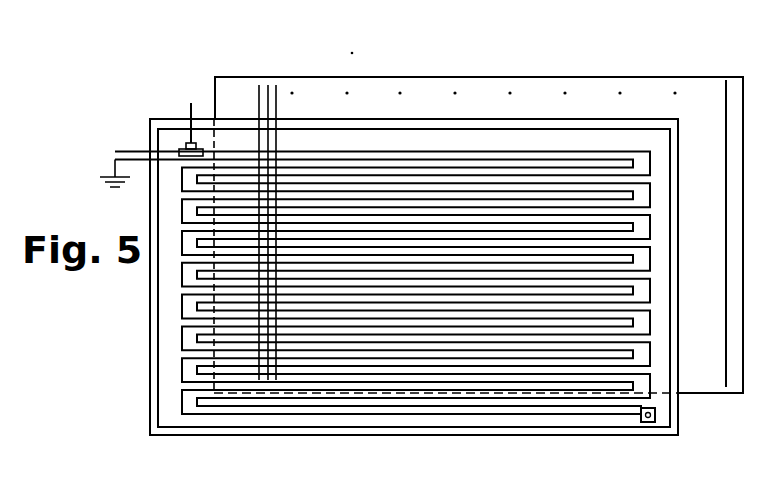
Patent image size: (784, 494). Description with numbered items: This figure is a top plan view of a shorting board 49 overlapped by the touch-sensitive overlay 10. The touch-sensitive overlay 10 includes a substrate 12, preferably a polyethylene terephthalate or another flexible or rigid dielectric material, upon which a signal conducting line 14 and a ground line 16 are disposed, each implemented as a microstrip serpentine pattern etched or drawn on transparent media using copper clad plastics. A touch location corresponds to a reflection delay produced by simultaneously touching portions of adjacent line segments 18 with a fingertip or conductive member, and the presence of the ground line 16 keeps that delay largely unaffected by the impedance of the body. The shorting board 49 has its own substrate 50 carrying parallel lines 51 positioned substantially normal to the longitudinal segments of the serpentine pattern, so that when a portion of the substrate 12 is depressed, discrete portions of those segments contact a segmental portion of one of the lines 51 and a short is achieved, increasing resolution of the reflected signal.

The touch-sensitive overlay 10 is at (125, 409).
The substrate 12 is at (232, 437).
The signal conducting line 14 is at (433, 391).
The ground line 16 is at (352, 151).
The line segments 18 is at (412, 159).
The shorting board 49 is at (304, 72).
The substrate 50 is at (215, 98).
The parallel lines 51 is at (259, 100).